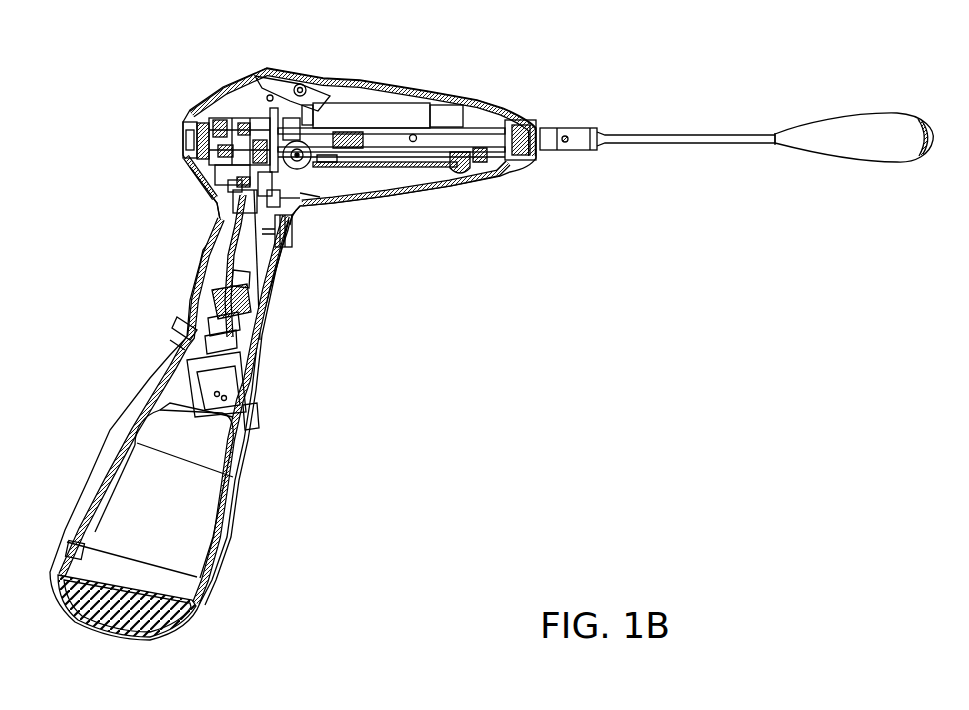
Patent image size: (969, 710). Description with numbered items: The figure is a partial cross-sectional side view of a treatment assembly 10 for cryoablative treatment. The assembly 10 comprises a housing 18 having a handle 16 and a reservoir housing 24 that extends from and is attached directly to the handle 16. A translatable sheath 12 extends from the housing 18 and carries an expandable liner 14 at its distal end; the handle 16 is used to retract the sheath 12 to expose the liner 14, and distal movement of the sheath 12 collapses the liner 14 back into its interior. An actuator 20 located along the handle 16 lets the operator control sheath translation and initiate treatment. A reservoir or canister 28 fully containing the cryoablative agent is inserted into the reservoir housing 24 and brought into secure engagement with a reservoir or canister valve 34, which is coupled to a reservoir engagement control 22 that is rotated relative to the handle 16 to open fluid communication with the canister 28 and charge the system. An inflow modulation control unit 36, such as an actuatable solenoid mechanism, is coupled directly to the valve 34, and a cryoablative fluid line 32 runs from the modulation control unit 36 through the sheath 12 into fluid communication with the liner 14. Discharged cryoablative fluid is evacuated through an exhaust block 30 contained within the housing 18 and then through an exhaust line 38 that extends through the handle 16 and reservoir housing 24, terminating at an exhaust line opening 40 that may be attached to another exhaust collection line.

The treatment assembly 10 is at (157, 78).
The sheath 12 is at (687, 147).
The expandable liner 14 is at (880, 162).
The handle 16 is at (203, 272).
The housing 18 is at (387, 203).
The actuator 20 is at (292, 231).
The reservoir engagement control 22 is at (255, 413).
The reservoir housing 24 is at (217, 547).
The reservoir or canister 28 is at (203, 527).
The exhaust block 30 is at (183, 133).
The cryoablative fluid line 32 is at (299, 84).
The reservoir or canister valve 34 is at (247, 380).
The inflow modulation control unit 36 is at (228, 323).
The exhaust line 38 is at (180, 343).
The exhaust line opening 40 is at (70, 600).